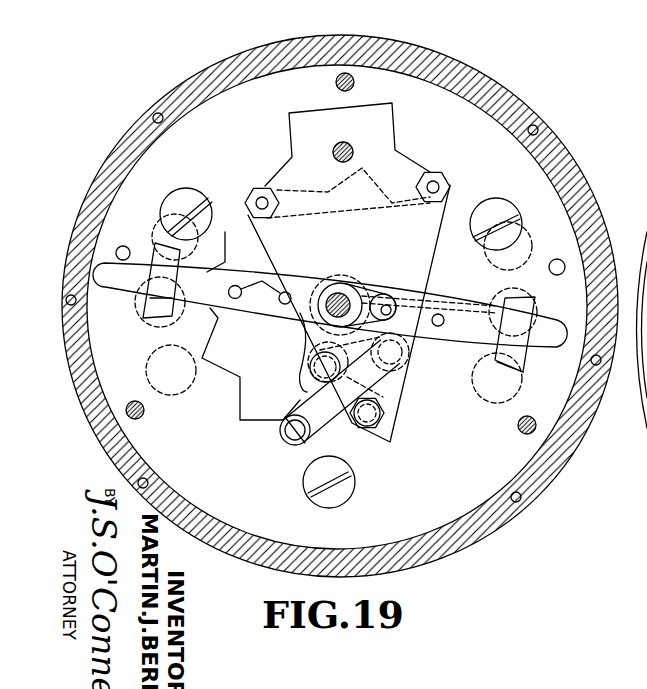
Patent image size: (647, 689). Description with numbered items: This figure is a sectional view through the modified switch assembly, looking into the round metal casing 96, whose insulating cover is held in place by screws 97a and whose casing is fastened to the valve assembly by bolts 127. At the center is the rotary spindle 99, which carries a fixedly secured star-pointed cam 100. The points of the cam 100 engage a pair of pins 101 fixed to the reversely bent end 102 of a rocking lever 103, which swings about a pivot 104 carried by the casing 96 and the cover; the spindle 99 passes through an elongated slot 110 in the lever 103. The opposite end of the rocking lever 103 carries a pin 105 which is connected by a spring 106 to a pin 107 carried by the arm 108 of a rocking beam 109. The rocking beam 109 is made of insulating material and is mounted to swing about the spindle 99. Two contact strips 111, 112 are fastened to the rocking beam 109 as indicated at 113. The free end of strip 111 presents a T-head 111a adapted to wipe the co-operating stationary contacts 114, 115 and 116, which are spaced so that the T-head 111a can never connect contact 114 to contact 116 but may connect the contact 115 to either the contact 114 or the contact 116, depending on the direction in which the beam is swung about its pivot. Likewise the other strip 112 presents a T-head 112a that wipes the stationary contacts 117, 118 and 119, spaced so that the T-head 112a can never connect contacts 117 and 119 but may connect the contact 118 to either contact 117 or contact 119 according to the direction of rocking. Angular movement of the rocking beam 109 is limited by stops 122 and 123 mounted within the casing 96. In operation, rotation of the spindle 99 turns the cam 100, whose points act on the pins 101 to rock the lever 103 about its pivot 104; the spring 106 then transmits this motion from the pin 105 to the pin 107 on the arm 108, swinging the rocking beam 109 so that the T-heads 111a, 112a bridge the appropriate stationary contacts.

The metal casing 96 is at (222, 102).
The screws 97a is at (356, 82).
The rotary spindle 99 is at (341, 298).
The star-pointed cam 100 is at (251, 364).
The pins 101 is at (261, 190).
The reversely bent end 102 is at (322, 110).
The rocking lever 103 is at (349, 305).
The pivot 104 is at (352, 146).
The pin 105 is at (386, 418).
The spring 106 is at (300, 392).
The pin 107 is at (317, 372).
The arm 108 is at (300, 350).
The rocking beam 109 is at (267, 276).
The elongated slot 110 is at (383, 295).
The contact strip 111 is at (188, 285).
The T-head 111a is at (157, 310).
The contact strip 112 is at (457, 324).
The T-head 112a is at (526, 352).
The fastening 113 is at (273, 276).
The stationary contact 114 is at (158, 222).
The stationary contact 115 is at (134, 302).
The stationary contact 116 is at (152, 376).
The stationary contact 117 is at (520, 386).
The stationary contact 118 is at (538, 305).
The stationary contact 119 is at (532, 243).
The stop 122 is at (137, 230).
The stop 123 is at (565, 260).
The bolts 127 is at (188, 195).